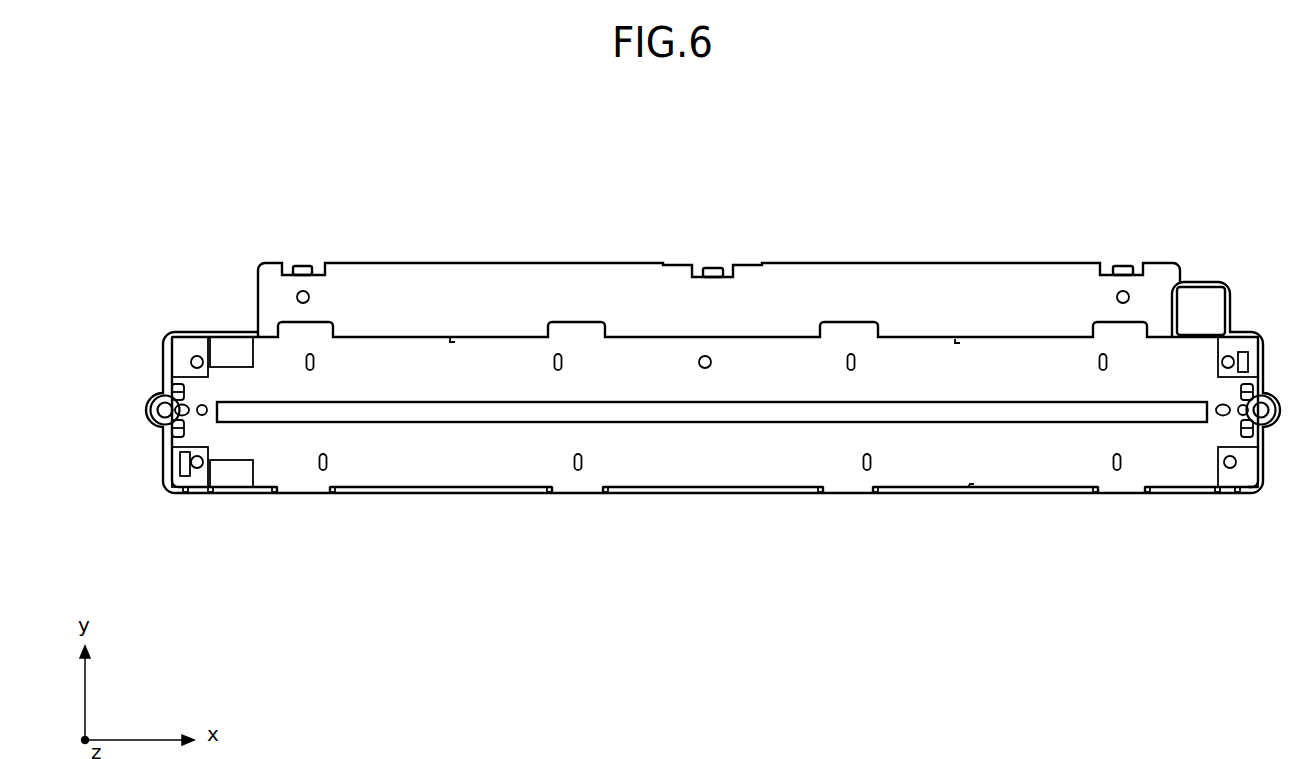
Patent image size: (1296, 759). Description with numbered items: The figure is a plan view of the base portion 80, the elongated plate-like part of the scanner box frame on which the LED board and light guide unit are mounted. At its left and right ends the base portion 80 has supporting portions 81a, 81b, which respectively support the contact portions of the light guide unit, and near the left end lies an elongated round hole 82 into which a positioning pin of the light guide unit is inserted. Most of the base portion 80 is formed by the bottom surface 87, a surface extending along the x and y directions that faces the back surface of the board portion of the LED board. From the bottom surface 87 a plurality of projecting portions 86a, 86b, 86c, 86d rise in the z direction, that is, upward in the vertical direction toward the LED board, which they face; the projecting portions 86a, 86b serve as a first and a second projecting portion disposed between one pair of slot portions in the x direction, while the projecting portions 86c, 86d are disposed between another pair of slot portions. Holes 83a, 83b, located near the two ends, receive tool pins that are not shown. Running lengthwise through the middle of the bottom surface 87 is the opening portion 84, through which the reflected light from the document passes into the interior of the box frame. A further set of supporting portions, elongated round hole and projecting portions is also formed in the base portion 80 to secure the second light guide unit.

The base portion 80 is at (796, 242).
The supporting portion 81a is at (164, 430).
The supporting portion 81b is at (1262, 430).
The elongated round hole 82 is at (186, 477).
The hole 83a is at (201, 469).
The hole 83b is at (1227, 468).
The opening portion 84 is at (668, 414).
The projecting portion 86a is at (328, 470).
The projecting portion 86b is at (583, 470).
The projecting portion 86c is at (871, 470).
The projecting portion 86d is at (1120, 470).
The bottom surface 87 is at (436, 462).